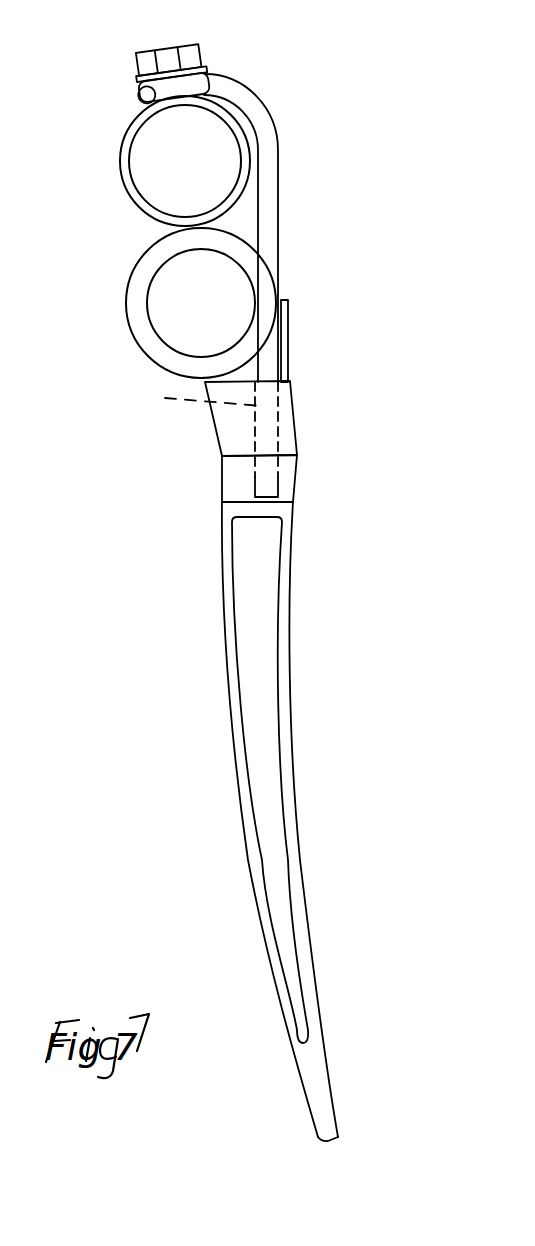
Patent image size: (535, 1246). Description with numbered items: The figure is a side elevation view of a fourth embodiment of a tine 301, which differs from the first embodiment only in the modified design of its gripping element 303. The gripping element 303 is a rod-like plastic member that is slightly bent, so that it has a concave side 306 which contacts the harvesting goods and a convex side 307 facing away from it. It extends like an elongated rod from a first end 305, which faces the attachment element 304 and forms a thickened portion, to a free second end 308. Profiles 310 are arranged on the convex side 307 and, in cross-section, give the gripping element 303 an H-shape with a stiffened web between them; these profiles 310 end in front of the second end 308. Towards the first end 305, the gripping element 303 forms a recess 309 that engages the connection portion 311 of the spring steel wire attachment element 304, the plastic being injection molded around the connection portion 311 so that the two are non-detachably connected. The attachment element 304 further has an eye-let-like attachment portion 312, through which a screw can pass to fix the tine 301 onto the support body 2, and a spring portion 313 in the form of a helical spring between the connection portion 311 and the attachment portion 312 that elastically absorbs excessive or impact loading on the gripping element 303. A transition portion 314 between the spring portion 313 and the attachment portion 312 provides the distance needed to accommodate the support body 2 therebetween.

The support body 2 is at (131, 200).
The tine 301 is at (510, 337).
The gripping element 303 is at (290, 495).
The attachment element 304 is at (360, 270).
The first end 305 is at (293, 423).
The concave side 306 is at (290, 703).
The convex side 307 is at (228, 713).
The second end 308 is at (327, 1143).
The recess 309 is at (280, 414).
The profiles 310 is at (257, 867).
The connection portion 311 is at (177, 402).
The attachment portion 312 is at (203, 80).
The spring portion 313 is at (147, 327).
The transition portion 314 is at (275, 170).